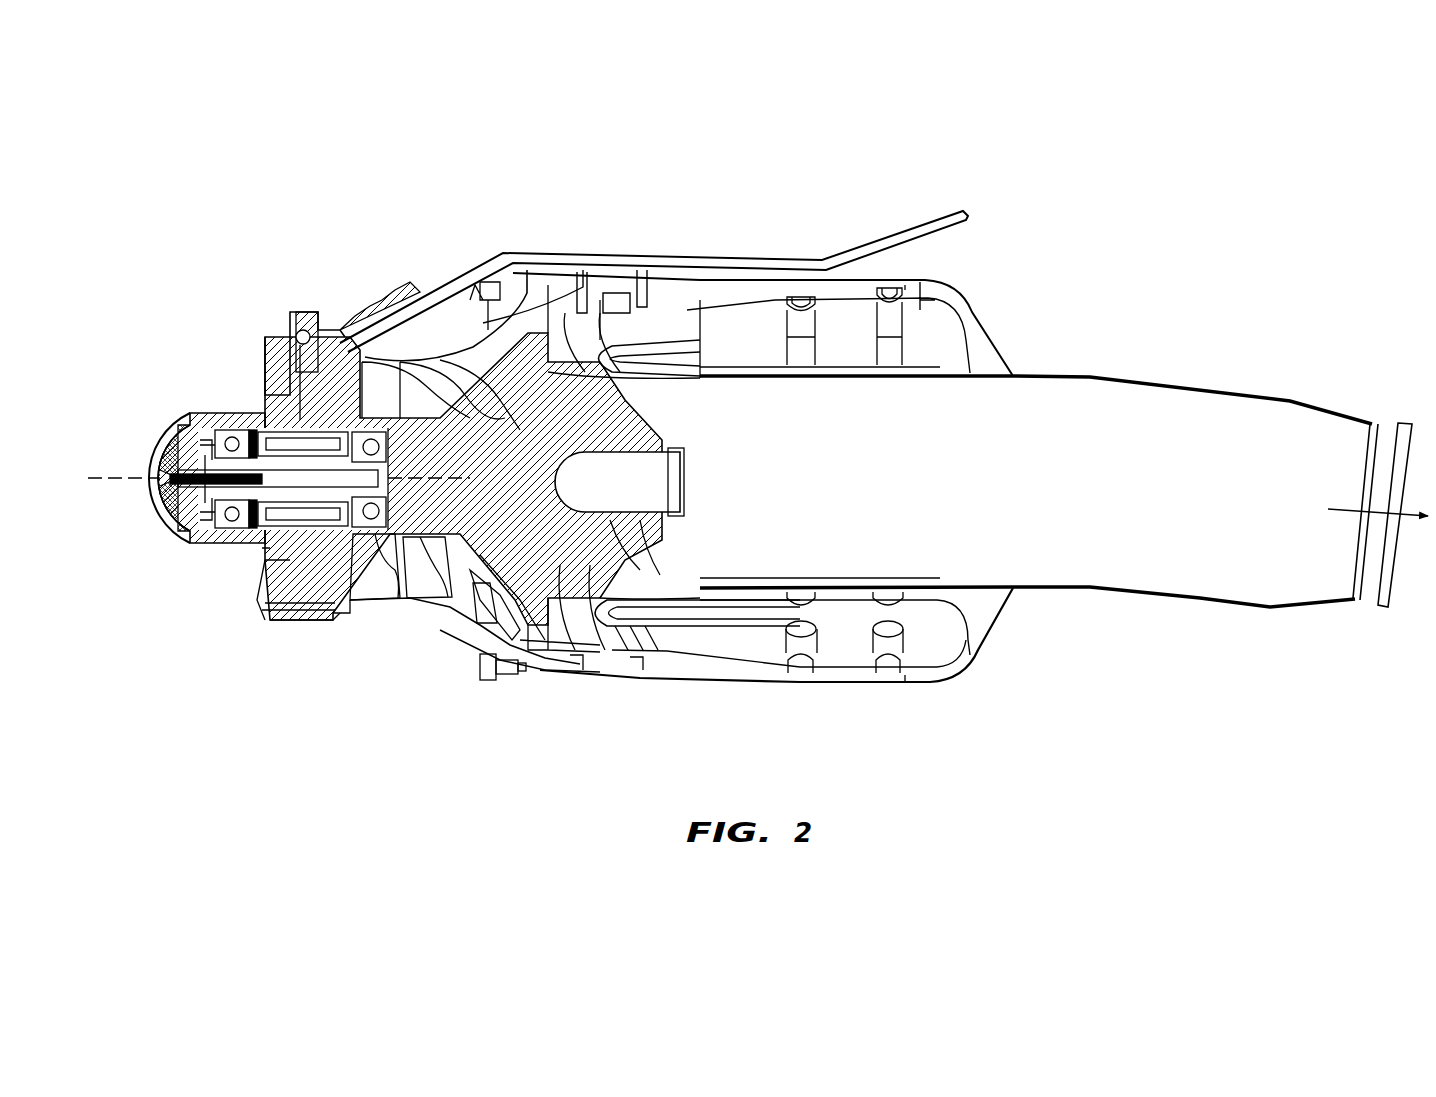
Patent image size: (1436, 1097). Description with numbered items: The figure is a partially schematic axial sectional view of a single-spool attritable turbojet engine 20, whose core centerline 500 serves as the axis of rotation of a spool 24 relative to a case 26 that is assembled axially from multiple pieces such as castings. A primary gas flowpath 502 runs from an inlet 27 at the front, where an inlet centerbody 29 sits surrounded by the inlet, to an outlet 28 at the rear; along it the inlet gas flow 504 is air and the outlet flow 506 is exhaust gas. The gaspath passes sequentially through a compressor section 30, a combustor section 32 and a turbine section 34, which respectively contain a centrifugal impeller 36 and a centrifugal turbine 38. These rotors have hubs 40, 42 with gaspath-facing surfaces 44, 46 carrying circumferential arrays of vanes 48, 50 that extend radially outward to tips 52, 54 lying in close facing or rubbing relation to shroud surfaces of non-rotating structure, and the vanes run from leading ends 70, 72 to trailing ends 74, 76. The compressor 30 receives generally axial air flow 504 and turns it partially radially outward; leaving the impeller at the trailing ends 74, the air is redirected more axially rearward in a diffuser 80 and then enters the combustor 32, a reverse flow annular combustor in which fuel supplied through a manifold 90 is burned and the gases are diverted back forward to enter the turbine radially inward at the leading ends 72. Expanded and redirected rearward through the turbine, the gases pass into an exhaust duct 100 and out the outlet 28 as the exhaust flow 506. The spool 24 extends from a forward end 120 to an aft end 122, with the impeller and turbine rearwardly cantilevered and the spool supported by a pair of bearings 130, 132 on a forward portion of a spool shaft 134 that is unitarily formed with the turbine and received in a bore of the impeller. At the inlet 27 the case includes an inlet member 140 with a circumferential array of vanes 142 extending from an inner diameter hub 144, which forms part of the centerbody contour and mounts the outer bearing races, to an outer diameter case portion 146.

The gas turbine engine 20 is at (1196, 238).
The spool 24 is at (430, 479).
The case 26 is at (735, 692).
The inlet 27 is at (254, 607).
The outlet 28 is at (1395, 582).
The inlet centerbody 29 is at (165, 417).
The compressor section 30 is at (462, 300).
The combustor section 32 is at (922, 703).
The turbine section 34 is at (580, 326).
The centrifugal impeller 36 is at (478, 630).
The centrifugal turbine 38 is at (565, 578).
The impeller hub 40 is at (478, 410).
The turbine hub 42 is at (622, 522).
The gaspath-facing surface of impeller hub 44 is at (393, 570).
The gaspath-facing surface of turbine hub 46 is at (672, 352).
The impeller vanes 48 is at (424, 582).
The turbine vanes 50 is at (630, 410).
The impeller vane tips 52 is at (490, 585).
The turbine vane tips 54 is at (615, 626).
The impeller vane leading ends 70 is at (370, 560).
The turbine vane leading ends 72 is at (545, 600).
The impeller vane trailing ends 74 is at (522, 668).
The turbine vane trailing ends 76 is at (640, 580).
The diffuser 80 is at (585, 298).
The manifold 90 is at (908, 634).
The exhaust duct 100 is at (1042, 436).
The spool forward end 120 is at (182, 503).
The spool aft end 122 is at (692, 487).
The bearing 130 is at (262, 548).
The bearing 132 is at (334, 600).
The spool shaft 134 is at (302, 465).
The inlet member 140 is at (300, 633).
The inlet vanes 142 is at (266, 606).
The inner diameter hub 144 is at (258, 545).
The outer diameter case portion 146 is at (284, 330).
The core centerline 500 is at (98, 468).
The primary gas flowpath 502 is at (228, 386).
The inlet gas flow 504 is at (226, 594).
The outlet flow 506 is at (1350, 506).